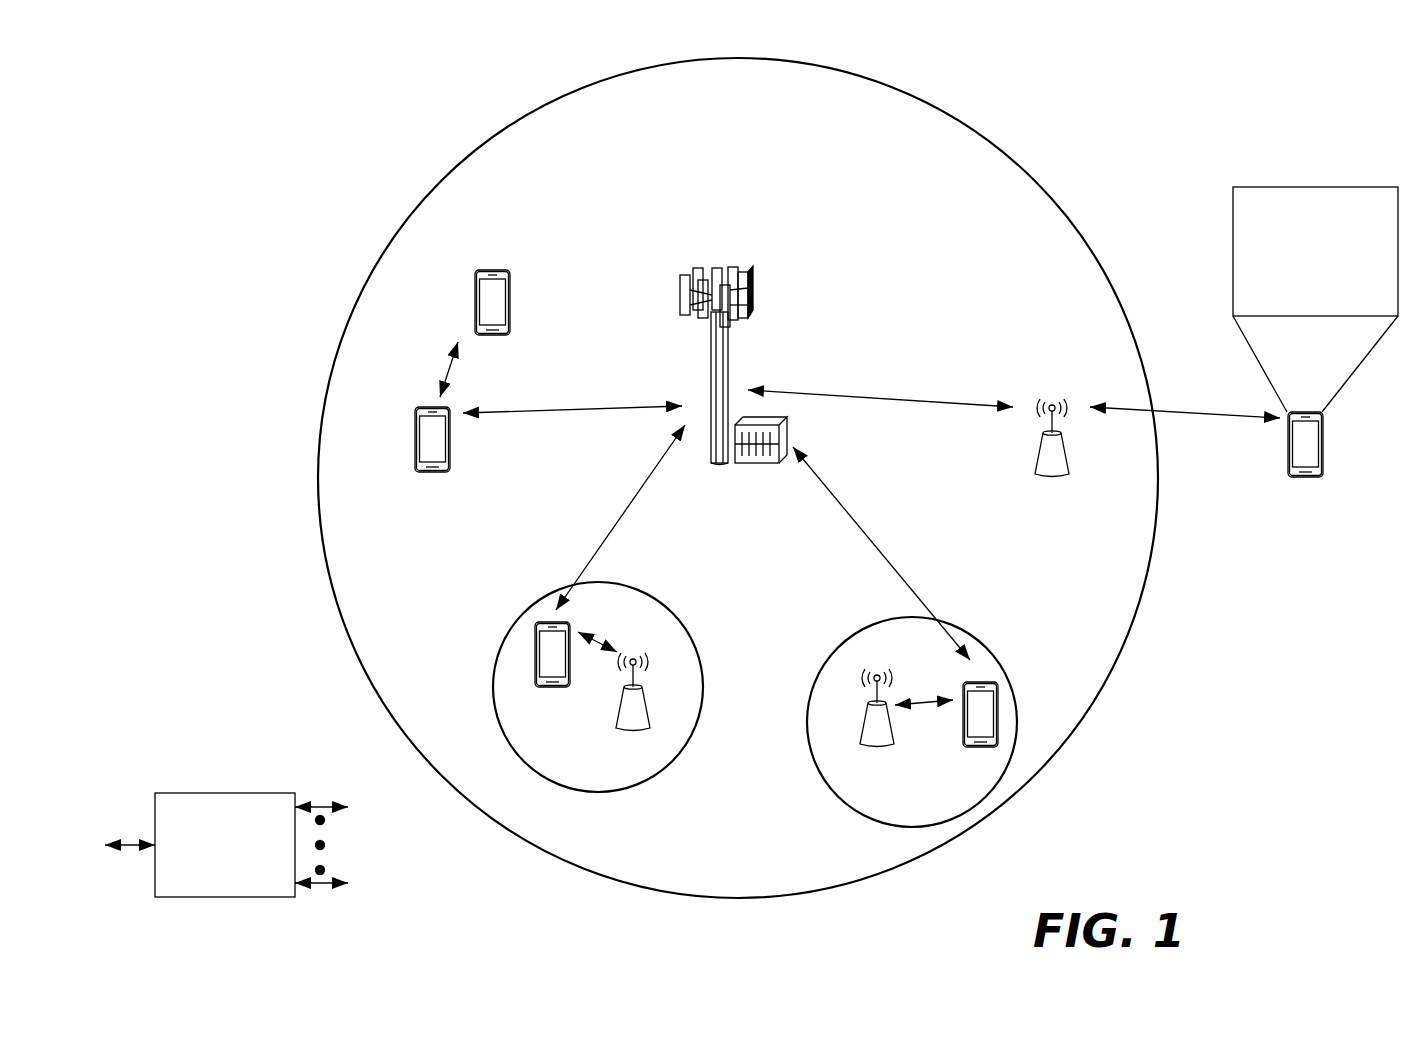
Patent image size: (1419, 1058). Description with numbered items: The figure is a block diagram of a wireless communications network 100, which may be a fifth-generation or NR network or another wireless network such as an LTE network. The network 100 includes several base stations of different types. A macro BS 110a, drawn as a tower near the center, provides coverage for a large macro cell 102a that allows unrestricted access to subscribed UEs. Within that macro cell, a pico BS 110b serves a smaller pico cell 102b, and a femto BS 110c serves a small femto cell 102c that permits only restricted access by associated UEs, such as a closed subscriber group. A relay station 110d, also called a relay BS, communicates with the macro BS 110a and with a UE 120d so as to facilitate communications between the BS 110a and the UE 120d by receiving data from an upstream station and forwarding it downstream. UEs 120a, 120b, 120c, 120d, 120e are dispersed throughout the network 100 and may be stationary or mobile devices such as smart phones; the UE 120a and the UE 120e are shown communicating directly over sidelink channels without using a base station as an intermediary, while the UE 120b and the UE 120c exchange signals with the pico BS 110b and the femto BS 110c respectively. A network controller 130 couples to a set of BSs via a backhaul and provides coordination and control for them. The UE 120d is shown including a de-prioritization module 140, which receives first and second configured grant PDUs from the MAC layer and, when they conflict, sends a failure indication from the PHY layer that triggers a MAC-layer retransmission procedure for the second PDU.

The network 100 is at (212, 53).
The macro cell 102a is at (1017, 162).
The pico cell 102b is at (688, 625).
The femto cell 102c is at (850, 637).
The macro BS 110a is at (724, 258).
The pico BS 110b is at (654, 714).
The femto BS 110c is at (862, 733).
The relay station 110d is at (1052, 398).
The UE 120a is at (415, 440).
The UE 120b is at (540, 687).
The UE 120c is at (970, 747).
The UE 120d is at (1322, 440).
The UE 120e is at (475, 290).
The network controller 130 is at (222, 793).
The de-prioritization module 140 is at (1315, 299).